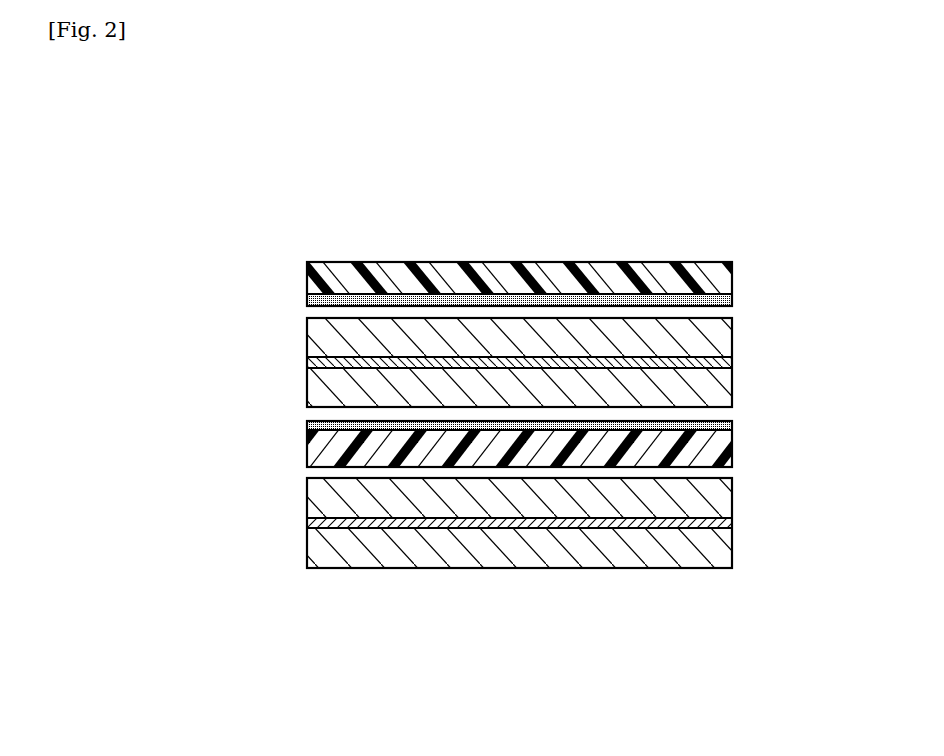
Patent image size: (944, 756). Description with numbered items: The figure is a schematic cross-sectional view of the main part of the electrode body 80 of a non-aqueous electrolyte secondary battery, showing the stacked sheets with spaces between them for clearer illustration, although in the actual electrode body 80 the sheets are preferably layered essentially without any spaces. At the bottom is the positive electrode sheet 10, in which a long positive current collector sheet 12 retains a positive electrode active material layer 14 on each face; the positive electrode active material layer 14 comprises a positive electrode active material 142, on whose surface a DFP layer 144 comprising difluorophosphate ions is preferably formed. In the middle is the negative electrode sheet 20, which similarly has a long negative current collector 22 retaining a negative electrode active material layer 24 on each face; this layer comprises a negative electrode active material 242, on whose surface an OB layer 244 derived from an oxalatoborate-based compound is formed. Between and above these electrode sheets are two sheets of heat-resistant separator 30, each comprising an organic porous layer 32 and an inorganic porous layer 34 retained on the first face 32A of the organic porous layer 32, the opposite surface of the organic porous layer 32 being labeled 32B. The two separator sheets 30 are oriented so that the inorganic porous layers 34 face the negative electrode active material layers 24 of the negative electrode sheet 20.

The electrode body 80 is at (680, 222).
The separator 30 is at (805, 257).
The organic porous layer 32 is at (725, 283).
The inorganic porous layer 34 is at (728, 298).
The first face 32A is at (307, 302).
The second surface of adhesive layer 32B is at (307, 262).
The negative electrode sheet 20 is at (217, 318).
The negative electrode active material layer 24 is at (315, 343).
The negative current collector 22 is at (313, 363).
The negative electrode active material 242 is at (581, 362).
The OB layer 244 is at (723, 340).
The positive electrode sheet 10 is at (217, 483).
The positive electrode active material layer 14 is at (313, 493).
The positive current collector sheet 12 is at (313, 523).
The positive electrode active material 142 is at (519, 560).
The DFP layer 144 is at (415, 557).